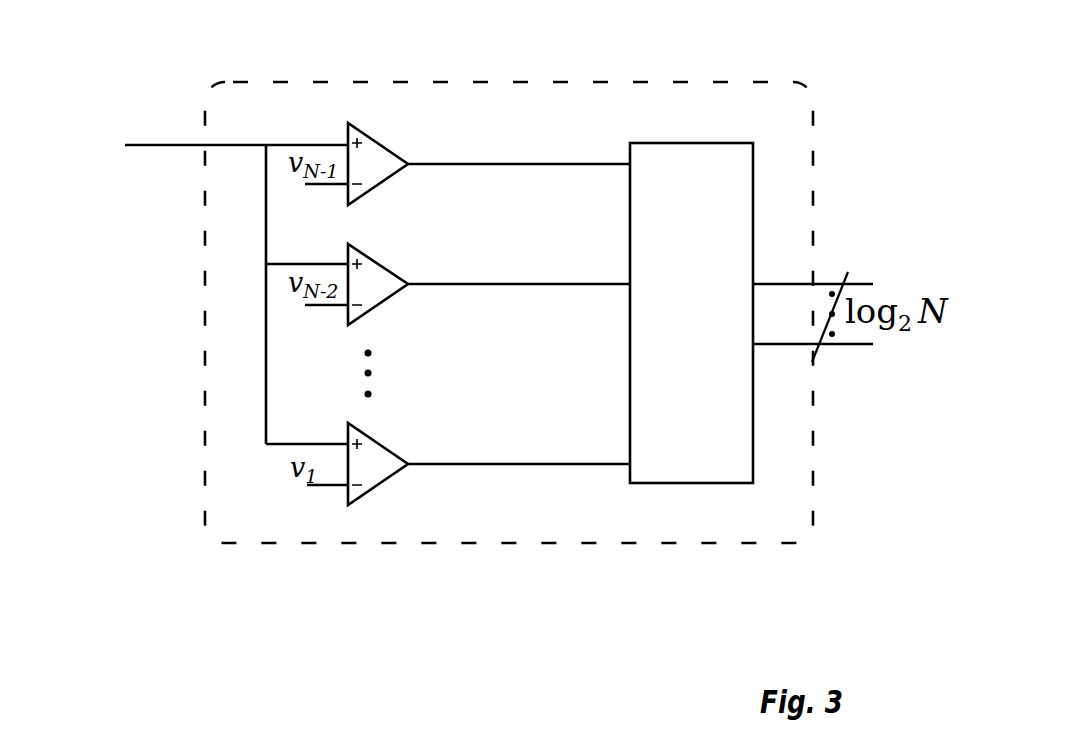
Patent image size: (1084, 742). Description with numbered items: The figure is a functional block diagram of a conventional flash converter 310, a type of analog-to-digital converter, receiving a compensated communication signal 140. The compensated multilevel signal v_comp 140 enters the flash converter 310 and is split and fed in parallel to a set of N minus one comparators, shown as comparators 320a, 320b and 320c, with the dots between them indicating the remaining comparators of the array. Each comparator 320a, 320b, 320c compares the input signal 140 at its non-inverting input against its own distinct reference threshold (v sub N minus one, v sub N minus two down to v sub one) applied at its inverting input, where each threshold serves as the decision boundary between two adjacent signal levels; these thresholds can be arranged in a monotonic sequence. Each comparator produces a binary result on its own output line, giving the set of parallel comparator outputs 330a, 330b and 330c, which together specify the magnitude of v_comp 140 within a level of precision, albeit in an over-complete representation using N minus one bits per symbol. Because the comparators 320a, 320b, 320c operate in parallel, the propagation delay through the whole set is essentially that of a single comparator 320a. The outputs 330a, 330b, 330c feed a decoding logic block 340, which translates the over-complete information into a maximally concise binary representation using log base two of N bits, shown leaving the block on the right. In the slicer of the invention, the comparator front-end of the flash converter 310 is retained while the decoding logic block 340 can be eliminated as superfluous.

The compensated communication signal 140 is at (133, 113).
The flash converter 310 is at (480, 85).
The comparator 320a is at (382, 142).
The comparator 320b is at (382, 262).
The comparator 320c is at (380, 442).
The comparator output 330a is at (512, 163).
The comparator output 330b is at (512, 283).
The comparator output 330c is at (510, 464).
The decoding logic block 340 is at (682, 143).